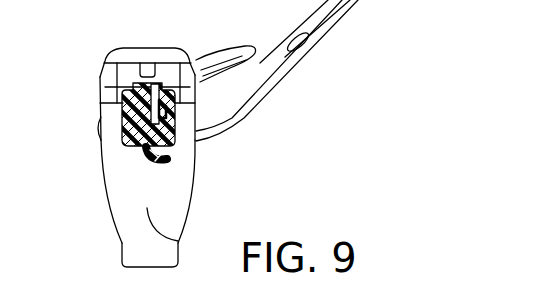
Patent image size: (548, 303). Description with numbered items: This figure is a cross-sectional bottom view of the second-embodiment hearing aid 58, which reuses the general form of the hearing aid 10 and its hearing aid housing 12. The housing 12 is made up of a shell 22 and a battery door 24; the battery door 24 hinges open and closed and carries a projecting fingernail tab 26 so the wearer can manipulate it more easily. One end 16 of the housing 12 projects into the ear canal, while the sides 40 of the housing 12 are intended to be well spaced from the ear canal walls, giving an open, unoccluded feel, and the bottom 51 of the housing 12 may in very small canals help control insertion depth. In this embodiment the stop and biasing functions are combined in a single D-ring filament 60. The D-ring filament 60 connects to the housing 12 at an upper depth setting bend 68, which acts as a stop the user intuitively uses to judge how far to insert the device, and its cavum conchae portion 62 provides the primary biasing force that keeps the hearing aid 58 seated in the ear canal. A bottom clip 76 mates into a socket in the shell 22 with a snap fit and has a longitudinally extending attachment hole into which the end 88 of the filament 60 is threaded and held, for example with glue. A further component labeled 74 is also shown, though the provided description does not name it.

The hearing aid 10 is at (146, 70).
The hearing aid housing 12 is at (196, 207).
The end of housing 16 is at (124, 243).
The shell 22 is at (115, 210).
The battery door 24 is at (163, 72).
The projecting fingernail tab 26 is at (104, 67).
The sides of housing 40 is at (102, 181).
The bottom of housing 51 is at (178, 241).
The hearing aid 58 is at (341, 92).
The D-ring filament 60 is at (257, 100).
The cavum conchae portion 62 is at (327, 22).
The upper depth setting bend 68 is at (205, 58).
The notch 74 is at (149, 60).
The bottom clip 76 is at (123, 128).
The end of filament 88 is at (124, 146).